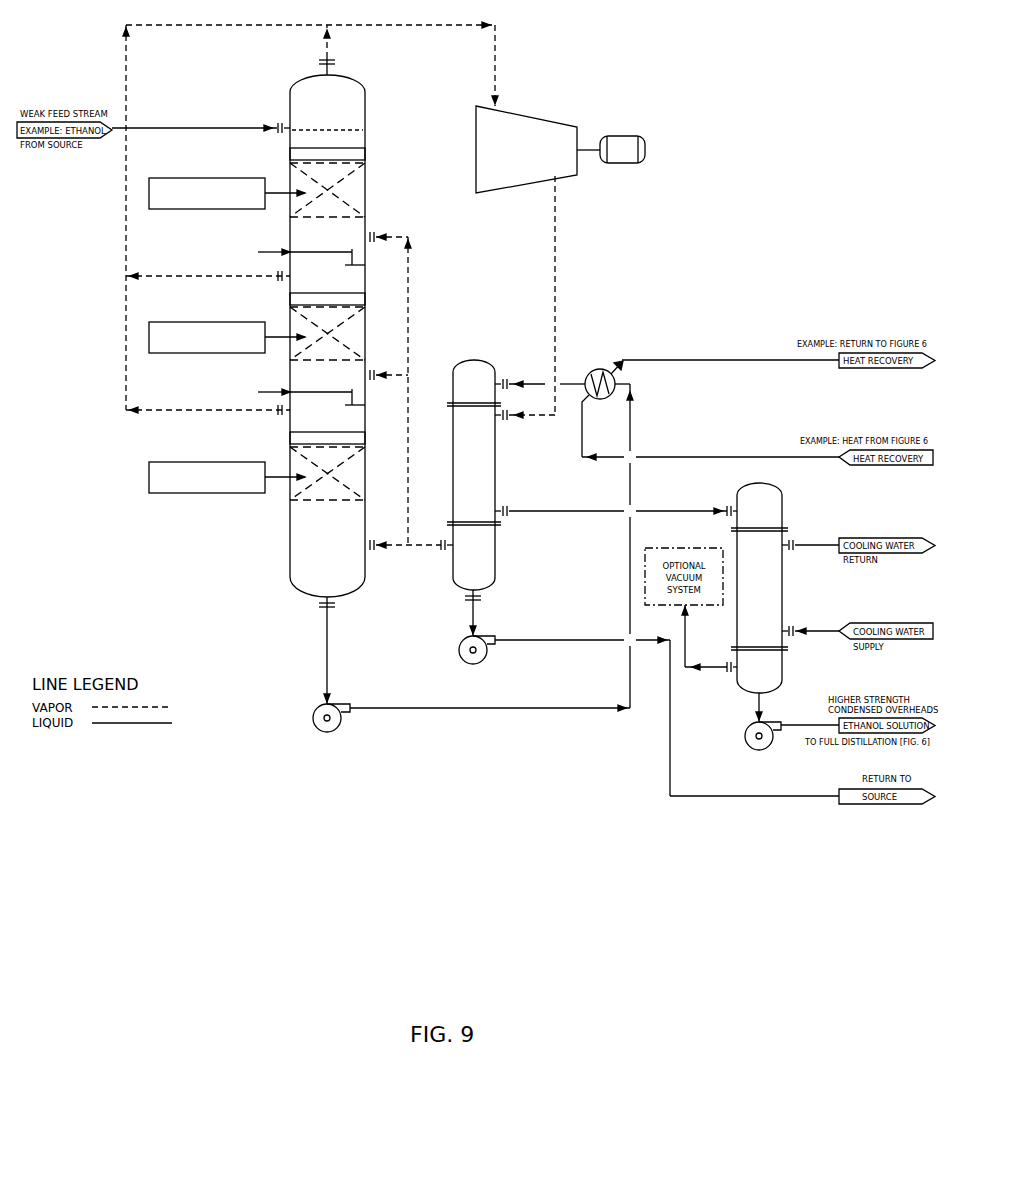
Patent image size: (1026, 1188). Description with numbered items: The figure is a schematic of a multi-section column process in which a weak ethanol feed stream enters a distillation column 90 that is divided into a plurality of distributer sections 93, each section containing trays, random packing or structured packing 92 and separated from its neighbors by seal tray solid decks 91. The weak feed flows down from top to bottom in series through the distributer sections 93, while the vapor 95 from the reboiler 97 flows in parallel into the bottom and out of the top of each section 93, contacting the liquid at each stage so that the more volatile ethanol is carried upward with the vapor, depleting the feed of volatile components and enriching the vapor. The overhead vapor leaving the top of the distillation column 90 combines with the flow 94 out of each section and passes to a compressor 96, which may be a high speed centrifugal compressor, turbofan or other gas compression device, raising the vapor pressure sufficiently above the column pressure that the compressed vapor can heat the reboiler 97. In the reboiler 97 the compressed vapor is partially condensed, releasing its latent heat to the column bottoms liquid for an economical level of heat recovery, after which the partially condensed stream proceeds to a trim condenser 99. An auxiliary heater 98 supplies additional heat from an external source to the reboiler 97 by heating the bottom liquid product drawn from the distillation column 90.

The distillation column 90 is at (290, 545).
The seal tray solid deck 91 is at (218, 250).
The trays, random packing or structured packing 92 is at (190, 178).
The distributer section 93 is at (365, 153).
The flow out each section 94 is at (126, 245).
The vapor 95 is at (410, 559).
The compressor 96 is at (528, 113).
The reboiler 97 is at (497, 452).
The auxiliary heater 98 is at (597, 370).
The trim condenser 99 is at (782, 573).